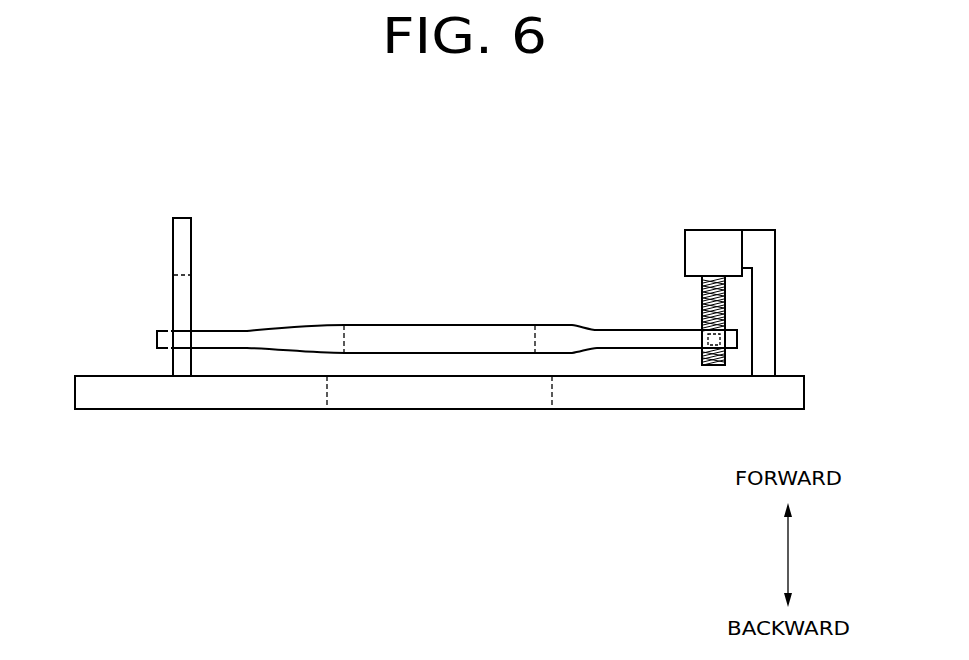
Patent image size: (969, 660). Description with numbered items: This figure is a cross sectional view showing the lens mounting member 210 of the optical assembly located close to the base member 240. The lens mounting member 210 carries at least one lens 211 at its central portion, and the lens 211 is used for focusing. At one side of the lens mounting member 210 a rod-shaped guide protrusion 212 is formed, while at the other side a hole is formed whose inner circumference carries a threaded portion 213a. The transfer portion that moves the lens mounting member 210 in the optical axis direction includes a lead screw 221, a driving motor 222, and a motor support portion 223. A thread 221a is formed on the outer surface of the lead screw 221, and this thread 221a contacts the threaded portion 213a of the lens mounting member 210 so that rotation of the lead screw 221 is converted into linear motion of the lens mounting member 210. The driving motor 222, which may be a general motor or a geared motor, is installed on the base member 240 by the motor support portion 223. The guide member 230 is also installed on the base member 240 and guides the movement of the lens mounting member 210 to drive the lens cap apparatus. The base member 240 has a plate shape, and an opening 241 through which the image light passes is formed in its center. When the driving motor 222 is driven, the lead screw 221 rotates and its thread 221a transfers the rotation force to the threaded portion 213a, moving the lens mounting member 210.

The lens mounting member 210 is at (323, 335).
The lens 211 is at (443, 334).
The guide protrusion 212 is at (162, 342).
The threaded portion 213a is at (703, 341).
The lead screw 221 is at (736, 291).
The thread 221a is at (703, 300).
The driving motor 222 is at (716, 237).
The motor support portion 223 is at (771, 338).
The guide member 230 is at (182, 226).
The base member 240 is at (108, 397).
The opening 241 is at (328, 397).